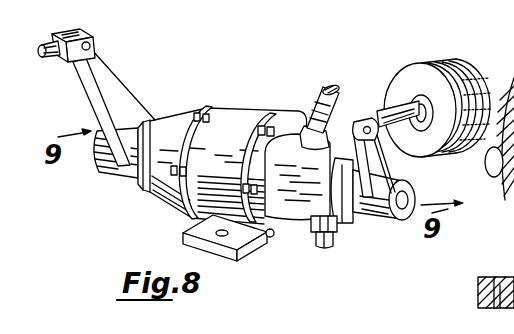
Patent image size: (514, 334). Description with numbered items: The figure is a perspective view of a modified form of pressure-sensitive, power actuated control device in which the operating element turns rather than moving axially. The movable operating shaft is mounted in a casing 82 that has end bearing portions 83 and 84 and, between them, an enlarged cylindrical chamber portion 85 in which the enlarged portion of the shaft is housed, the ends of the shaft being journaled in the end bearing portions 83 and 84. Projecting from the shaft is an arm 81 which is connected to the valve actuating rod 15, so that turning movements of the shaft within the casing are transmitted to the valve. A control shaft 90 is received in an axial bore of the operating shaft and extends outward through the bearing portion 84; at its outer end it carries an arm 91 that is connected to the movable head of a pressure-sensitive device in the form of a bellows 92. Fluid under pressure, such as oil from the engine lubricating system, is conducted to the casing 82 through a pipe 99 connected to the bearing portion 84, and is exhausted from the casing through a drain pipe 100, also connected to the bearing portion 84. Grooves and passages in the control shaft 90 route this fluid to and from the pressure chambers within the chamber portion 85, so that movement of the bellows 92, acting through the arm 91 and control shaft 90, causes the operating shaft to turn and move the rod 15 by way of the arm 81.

The valve actuating rod 15 is at (55, 58).
The arm 81 is at (117, 82).
The end bearing portion 83 is at (178, 125).
The enlarged cylindrical chamber portion 85 is at (244, 113).
The casing 82 is at (292, 123).
The pipe 99 is at (334, 86).
The end bearing portion 84 is at (340, 124).
The bellows 92 is at (422, 64).
The arm 91 is at (380, 163).
The control shaft 90 is at (404, 198).
The drain pipe 100 is at (337, 241).